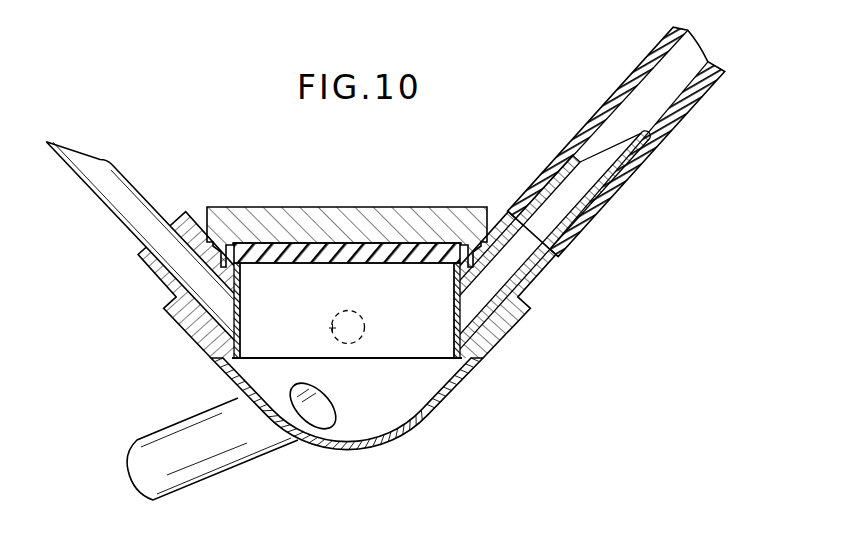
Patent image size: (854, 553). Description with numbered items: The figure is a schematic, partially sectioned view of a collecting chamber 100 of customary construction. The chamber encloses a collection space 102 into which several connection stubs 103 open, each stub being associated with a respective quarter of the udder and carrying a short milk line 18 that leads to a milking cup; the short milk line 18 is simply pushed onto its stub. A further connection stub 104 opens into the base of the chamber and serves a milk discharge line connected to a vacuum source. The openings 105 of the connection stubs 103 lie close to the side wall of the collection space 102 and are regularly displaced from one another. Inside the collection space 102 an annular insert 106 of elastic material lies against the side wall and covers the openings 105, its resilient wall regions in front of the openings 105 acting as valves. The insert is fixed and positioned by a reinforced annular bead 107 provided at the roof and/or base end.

The short milk line 18 is at (622, 97).
The collecting chamber 100 is at (252, 202).
The collection space 102 is at (367, 420).
The connection stubs 103 is at (117, 203).
The connection stub 104 is at (217, 460).
The openings 105 is at (331, 327).
The annular insert 106 is at (388, 347).
The reinforced annular bead 107 is at (386, 247).